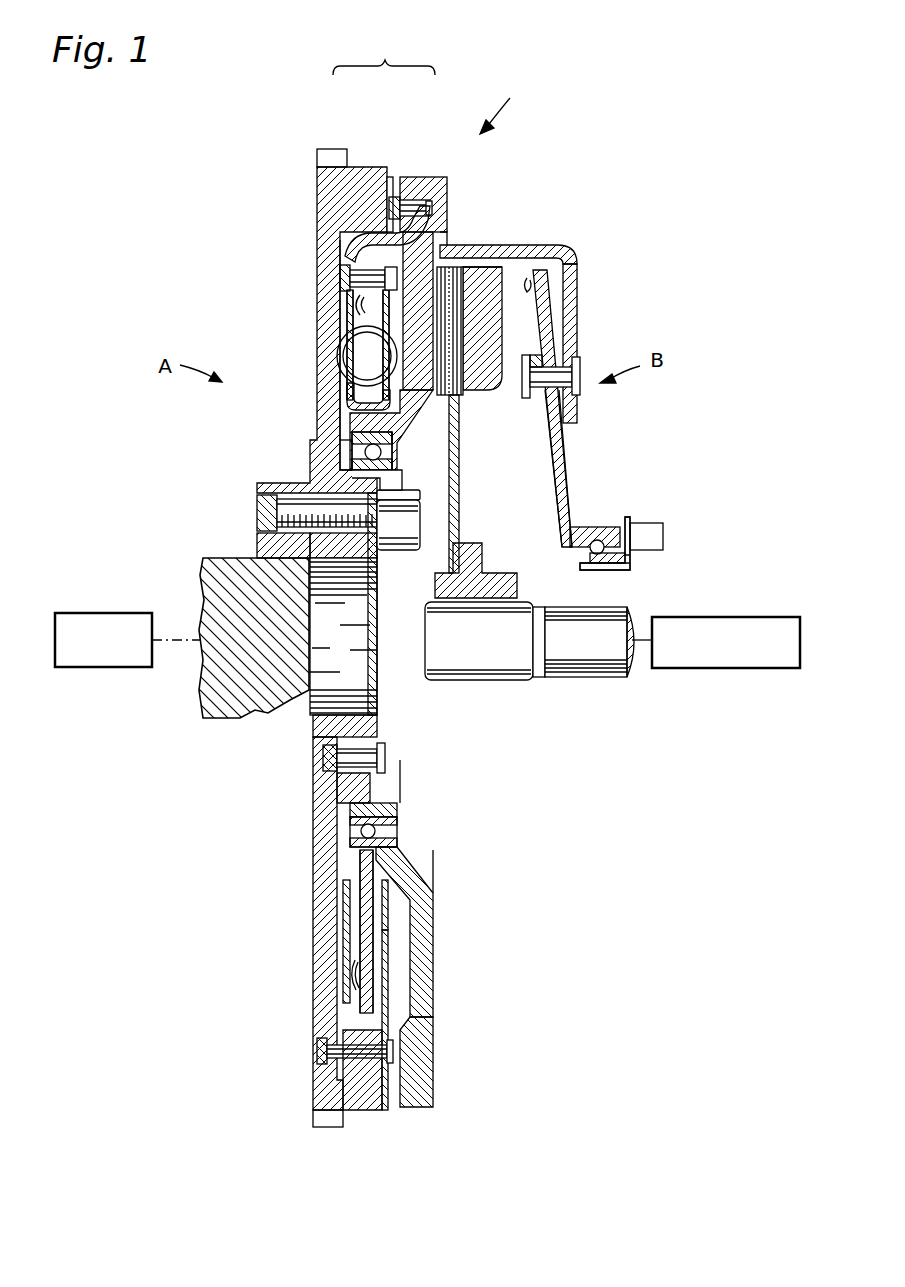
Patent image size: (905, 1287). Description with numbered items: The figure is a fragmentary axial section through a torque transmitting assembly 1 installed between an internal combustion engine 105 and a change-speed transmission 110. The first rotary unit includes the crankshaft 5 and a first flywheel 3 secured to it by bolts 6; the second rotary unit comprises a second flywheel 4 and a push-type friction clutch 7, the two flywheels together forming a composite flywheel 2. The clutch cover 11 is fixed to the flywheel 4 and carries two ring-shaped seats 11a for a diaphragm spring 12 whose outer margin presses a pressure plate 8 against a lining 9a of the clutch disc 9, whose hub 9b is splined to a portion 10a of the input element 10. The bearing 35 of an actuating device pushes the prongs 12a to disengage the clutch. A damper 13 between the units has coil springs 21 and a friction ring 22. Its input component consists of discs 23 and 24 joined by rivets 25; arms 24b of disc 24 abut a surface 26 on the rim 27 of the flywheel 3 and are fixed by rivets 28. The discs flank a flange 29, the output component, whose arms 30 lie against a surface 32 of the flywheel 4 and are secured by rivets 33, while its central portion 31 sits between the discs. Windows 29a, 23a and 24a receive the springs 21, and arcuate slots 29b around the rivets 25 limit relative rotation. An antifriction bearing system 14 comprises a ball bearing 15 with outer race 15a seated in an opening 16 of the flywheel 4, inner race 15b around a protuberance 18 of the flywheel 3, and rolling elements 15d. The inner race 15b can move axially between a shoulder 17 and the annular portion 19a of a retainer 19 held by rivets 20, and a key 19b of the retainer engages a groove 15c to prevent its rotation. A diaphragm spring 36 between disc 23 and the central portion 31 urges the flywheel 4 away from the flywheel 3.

The torque transmitting assembly 1 is at (500, 106).
The composite flywheel 2 is at (384, 53).
The first flywheel 3 is at (358, 182).
The second flywheel 4 is at (447, 247).
The crankshaft 5 is at (207, 688).
The bolts 6 is at (268, 512).
The friction clutch 7 is at (530, 313).
The pressure plate 8 is at (530, 300).
The clutch disc 9 is at (497, 307).
The lining 9a is at (468, 297).
The hub 9b is at (503, 584).
The input element 10 is at (580, 668).
The portion of input element 10a is at (463, 667).
The cover 11 is at (572, 290).
The seats 11a is at (538, 392).
The diaphragm spring 12 is at (550, 325).
The prongs 12a is at (560, 470).
The damper 13 is at (328, 362).
The antifriction bearing system 14 is at (442, 467).
The antifriction ball bearing 15 is at (381, 453).
The outer race 15a is at (395, 442).
The inner race 15b is at (394, 474).
The groove 15c is at (352, 462).
The spherical rolling elements 15d is at (372, 828).
The opening 16 is at (432, 426).
The shoulder 17 is at (340, 483).
The protuberance 18 is at (339, 555).
The retainer 19 is at (375, 730).
The annular portion 19a is at (398, 808).
The key 19b is at (380, 493).
The rivets 20 is at (386, 757).
The energy storing elements 21 is at (345, 342).
The friction generating device 22 is at (340, 268).
The disc 23 is at (343, 915).
The windows 23a is at (345, 318).
The disc 24 is at (388, 918).
The windows 24a is at (440, 324).
The arms 24b is at (390, 178).
The rivets 25 is at (432, 234).
The surface 26 is at (382, 1090).
The rim 27 is at (350, 1093).
The rivets 28 is at (327, 1050).
The flange 29 is at (367, 940).
The windows 29a is at (368, 366).
The slots 29b is at (360, 240).
The arms 30 is at (400, 196).
The central portion 31 is at (367, 940).
The surface 32 is at (424, 177).
The rivets 33 is at (433, 207).
The bearing of actuating device 35 is at (600, 526).
The diaphragm spring 36 is at (357, 310).
The internal combustion engine 105 is at (102, 620).
The change-speed transmission 110 is at (722, 665).